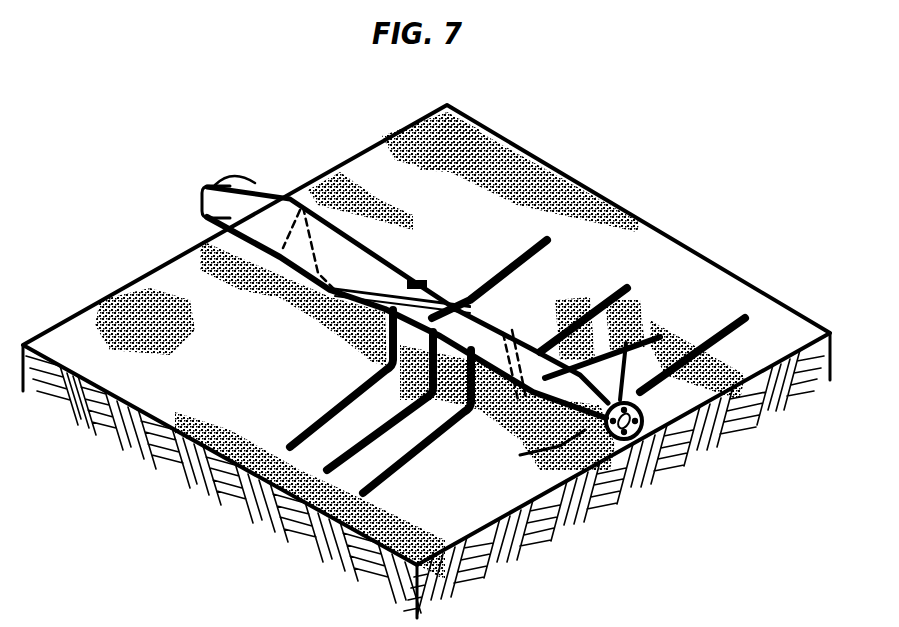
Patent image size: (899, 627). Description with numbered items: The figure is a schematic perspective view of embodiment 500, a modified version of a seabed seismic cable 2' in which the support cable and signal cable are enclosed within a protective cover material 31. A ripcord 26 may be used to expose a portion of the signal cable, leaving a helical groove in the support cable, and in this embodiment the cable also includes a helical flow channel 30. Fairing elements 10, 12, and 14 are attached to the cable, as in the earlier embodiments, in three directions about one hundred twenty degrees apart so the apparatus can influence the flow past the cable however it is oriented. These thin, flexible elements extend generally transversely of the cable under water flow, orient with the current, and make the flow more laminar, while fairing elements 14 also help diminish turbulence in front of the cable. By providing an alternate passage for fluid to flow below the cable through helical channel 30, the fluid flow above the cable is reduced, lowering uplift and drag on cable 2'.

The cable 2' is at (405, 259).
The fairing elements 10 is at (550, 263).
The fairing elements 12 is at (690, 352).
The fairing elements 14 is at (363, 443).
The ripcord 26 is at (626, 343).
The helical flow channel 30 is at (208, 187).
The protective cover material 31 is at (394, 268).
The embodiment 500 is at (515, 197).